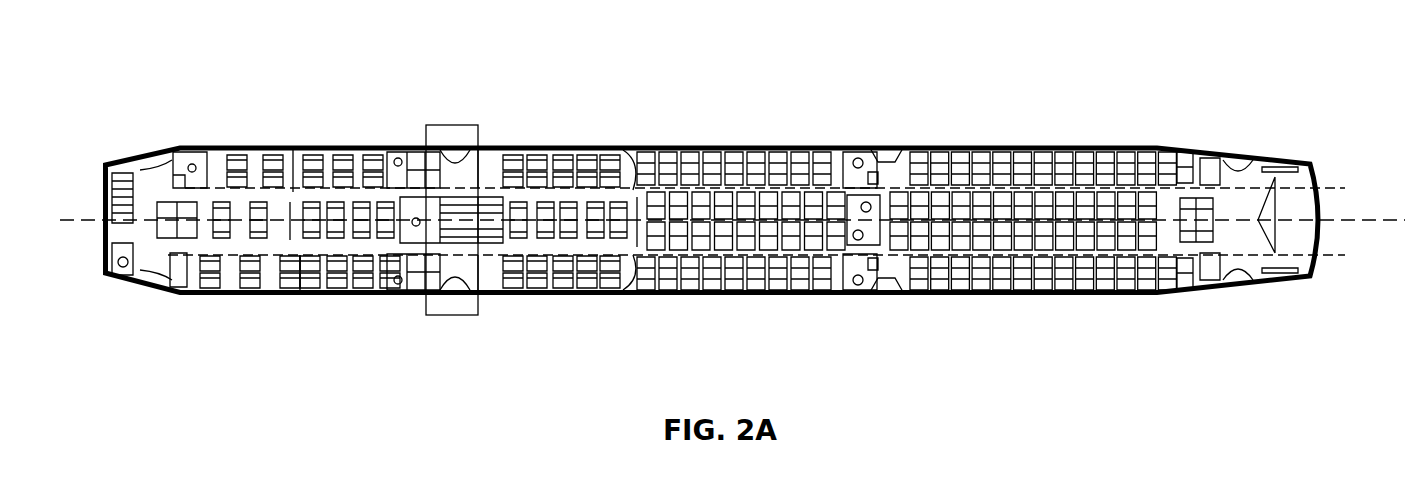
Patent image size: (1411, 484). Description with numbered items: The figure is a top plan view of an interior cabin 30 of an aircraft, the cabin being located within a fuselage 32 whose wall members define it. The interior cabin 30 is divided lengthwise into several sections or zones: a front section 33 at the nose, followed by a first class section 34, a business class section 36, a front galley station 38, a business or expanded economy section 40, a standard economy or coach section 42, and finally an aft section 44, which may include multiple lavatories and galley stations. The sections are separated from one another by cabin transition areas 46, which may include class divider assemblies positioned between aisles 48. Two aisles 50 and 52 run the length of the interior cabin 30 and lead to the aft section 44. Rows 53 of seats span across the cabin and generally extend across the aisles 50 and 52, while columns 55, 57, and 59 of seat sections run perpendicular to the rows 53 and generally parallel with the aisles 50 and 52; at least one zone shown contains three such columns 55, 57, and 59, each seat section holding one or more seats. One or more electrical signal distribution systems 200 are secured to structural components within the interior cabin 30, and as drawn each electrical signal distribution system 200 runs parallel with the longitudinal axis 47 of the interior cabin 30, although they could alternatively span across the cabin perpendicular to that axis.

The interior cabin 30 is at (243, 52).
The fuselage 32 is at (577, 88).
The front section 33 is at (163, 305).
The first class section 34 is at (257, 294).
The business class section 36 is at (332, 147).
The front galley station 38 is at (452, 316).
The expanded economy or coach section 40 is at (552, 294).
The standard economy or coach section 42 is at (682, 147).
The aft section 44 is at (1257, 160).
The cabin transition area 46 is at (178, 147).
The longitudinal axis 47 is at (1367, 222).
The aisles 48 is at (432, 188).
The aisle 50 is at (1043, 185).
The aisle 52 is at (1062, 257).
The rows of seats 53 is at (637, 308).
The column of seat sections 55 is at (637, 273).
The column of seat sections 57 is at (650, 213).
The column of seat sections 59 is at (643, 147).
The electrical signal distribution system 200 is at (805, 187).